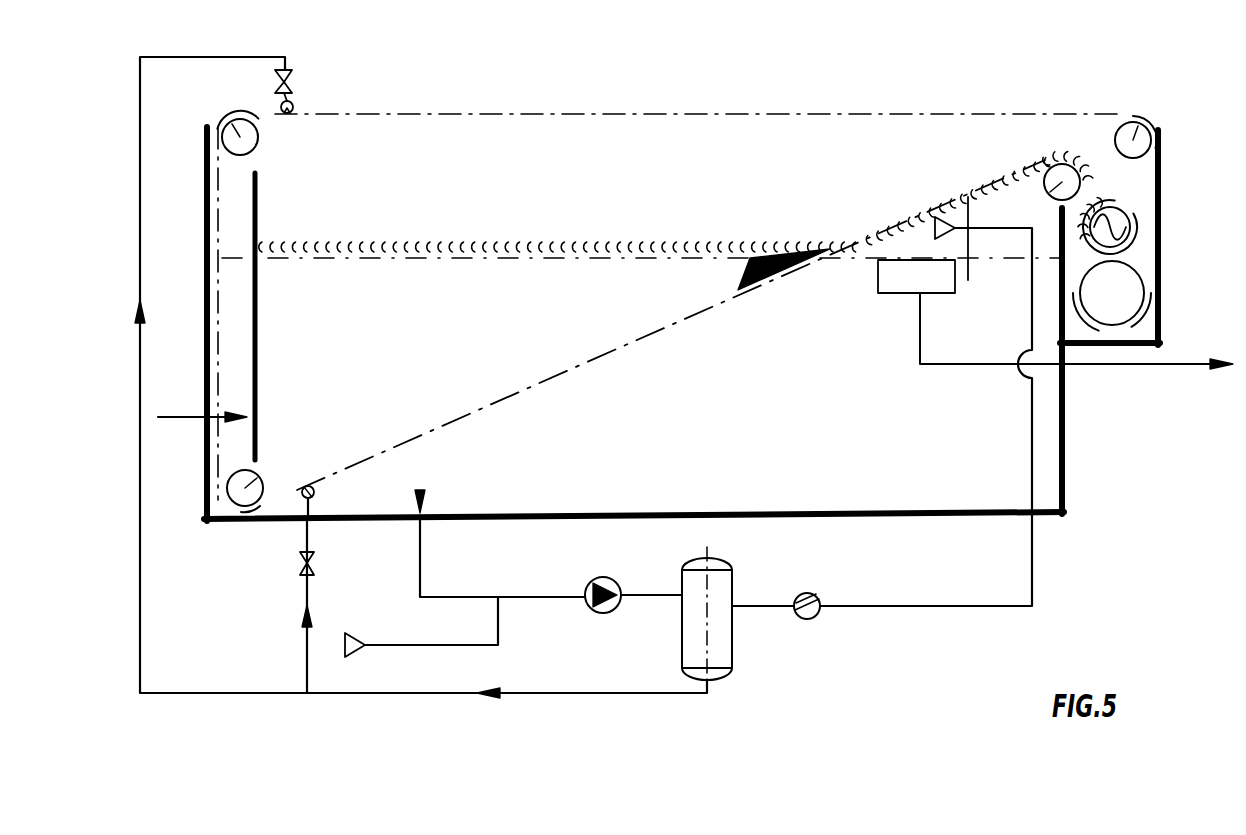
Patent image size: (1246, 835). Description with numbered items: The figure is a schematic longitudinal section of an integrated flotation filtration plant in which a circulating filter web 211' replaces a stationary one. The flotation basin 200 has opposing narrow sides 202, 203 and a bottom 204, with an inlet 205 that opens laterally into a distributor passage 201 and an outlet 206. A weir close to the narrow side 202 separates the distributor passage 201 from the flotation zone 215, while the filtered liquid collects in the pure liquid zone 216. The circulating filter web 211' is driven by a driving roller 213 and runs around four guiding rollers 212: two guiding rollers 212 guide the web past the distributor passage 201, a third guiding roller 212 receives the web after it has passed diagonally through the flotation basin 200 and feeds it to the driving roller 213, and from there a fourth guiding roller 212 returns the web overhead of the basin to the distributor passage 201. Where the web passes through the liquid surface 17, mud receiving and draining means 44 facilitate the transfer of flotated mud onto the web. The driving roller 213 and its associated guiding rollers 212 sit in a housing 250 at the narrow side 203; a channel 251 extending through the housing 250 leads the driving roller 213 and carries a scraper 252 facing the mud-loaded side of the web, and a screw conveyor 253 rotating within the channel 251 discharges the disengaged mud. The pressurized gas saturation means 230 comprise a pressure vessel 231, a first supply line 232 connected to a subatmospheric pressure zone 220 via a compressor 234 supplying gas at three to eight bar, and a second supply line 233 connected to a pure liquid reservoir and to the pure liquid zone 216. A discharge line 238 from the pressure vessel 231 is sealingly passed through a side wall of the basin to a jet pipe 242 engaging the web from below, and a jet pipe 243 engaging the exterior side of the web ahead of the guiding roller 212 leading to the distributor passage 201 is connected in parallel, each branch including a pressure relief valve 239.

The liquid surface 17 is at (452, 258).
The mud receiving and draining means 44 is at (768, 257).
The flotation basin 200 is at (508, 212).
The distributor passage 201 is at (236, 186).
The narrow side 202 is at (207, 192).
The narrow side 203 is at (1065, 442).
The bottom 204 is at (510, 513).
The inlet 205 is at (178, 415).
The outlet 206 is at (1055, 314).
The circulating filter web 211' is at (671, 325).
The guiding rollers 212 is at (240, 118).
The driving roller 213 is at (1138, 305).
The flotation zone 215 is at (350, 344).
The pure liquid zone 216 is at (848, 435).
The subatmospheric pressure zone 220 is at (922, 238).
The pressurized gas saturation means 230 is at (797, 659).
The pressure vessel 231 is at (733, 650).
The first supply line 232 is at (948, 604).
The second supply line 233 is at (512, 597).
The compressor 234 is at (800, 593).
The discharge line 238 is at (532, 692).
The pressure relief valve 239 is at (290, 74).
The jet pipe 242 is at (316, 496).
The jet pipe 243 is at (296, 105).
The housing 250 is at (1160, 165).
The channel 251 is at (1138, 250).
The scraper 252 is at (1090, 210).
The screw conveyor 253 is at (1140, 230).